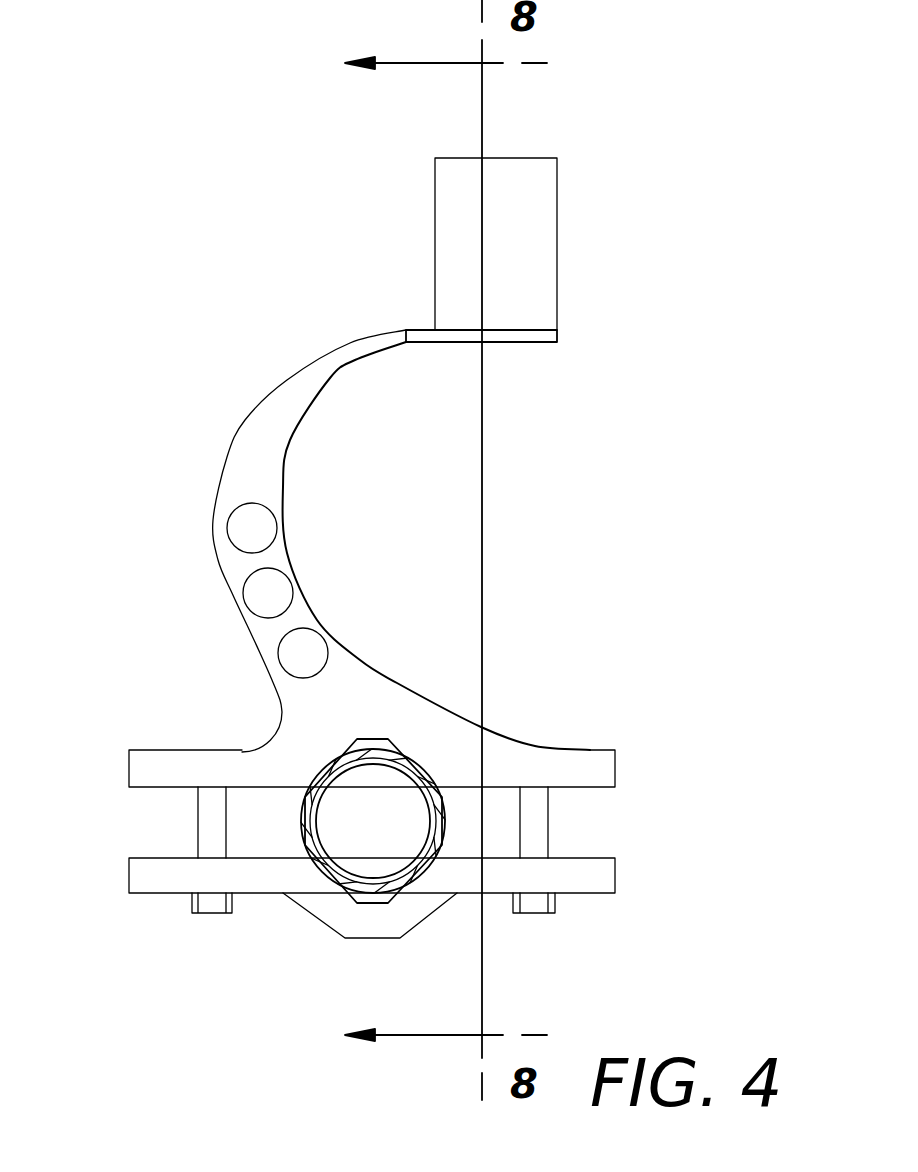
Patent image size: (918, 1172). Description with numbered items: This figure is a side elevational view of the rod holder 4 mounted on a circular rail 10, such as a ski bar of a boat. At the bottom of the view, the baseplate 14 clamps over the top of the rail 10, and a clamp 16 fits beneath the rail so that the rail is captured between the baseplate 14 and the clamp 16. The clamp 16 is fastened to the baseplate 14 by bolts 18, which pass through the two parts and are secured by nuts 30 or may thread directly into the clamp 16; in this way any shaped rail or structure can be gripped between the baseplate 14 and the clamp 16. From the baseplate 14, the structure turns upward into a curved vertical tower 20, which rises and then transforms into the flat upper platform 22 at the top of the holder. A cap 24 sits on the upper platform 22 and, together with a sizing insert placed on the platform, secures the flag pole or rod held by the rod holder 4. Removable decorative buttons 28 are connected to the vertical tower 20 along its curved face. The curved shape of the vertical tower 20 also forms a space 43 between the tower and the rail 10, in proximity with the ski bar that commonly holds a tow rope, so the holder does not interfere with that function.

The rod holder 4 is at (173, 258).
The rail 10 is at (305, 805).
The baseplate 14 is at (616, 768).
The clamp 16 is at (616, 880).
The bolt 18 is at (196, 812).
The vertical tower 20 is at (227, 460).
The upper platform 22 is at (426, 327).
The cap 24 is at (515, 218).
The decorative button 28 is at (290, 655).
The nut 30 is at (187, 903).
The space 43 is at (403, 508).